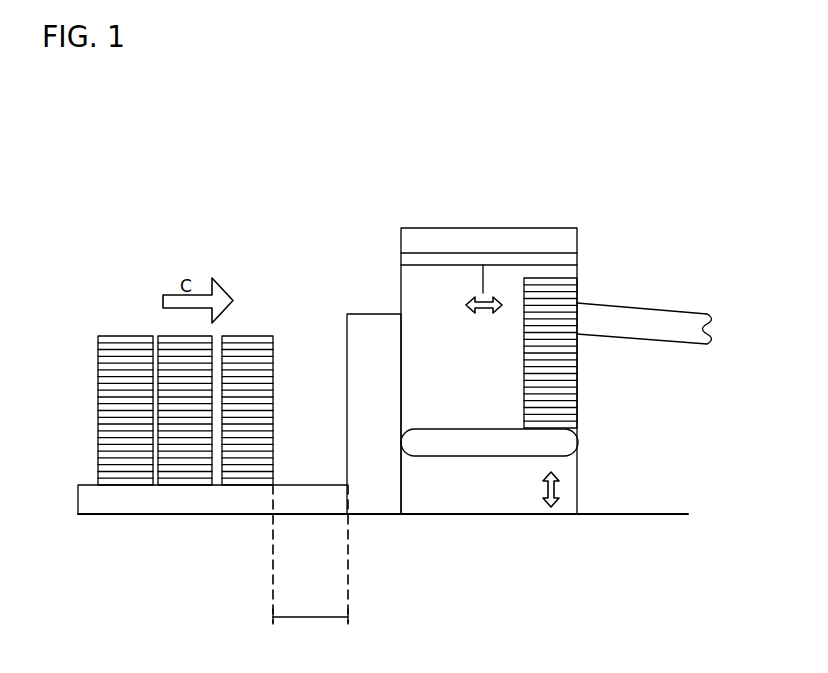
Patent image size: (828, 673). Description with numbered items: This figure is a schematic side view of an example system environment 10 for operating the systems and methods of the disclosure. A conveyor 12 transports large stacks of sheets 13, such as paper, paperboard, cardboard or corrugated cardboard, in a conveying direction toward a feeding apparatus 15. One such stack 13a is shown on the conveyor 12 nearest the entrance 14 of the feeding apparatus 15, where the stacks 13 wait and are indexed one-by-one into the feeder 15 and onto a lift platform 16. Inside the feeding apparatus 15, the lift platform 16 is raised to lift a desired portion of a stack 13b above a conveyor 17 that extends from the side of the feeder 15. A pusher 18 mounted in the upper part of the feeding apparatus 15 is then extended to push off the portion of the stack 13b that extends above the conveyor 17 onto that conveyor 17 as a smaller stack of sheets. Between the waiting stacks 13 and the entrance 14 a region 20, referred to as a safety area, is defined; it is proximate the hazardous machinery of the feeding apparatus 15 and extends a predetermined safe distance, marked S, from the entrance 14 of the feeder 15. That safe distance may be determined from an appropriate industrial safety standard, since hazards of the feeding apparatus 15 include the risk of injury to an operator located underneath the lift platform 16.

The system environment 10 is at (194, 212).
The conveyor 12 is at (163, 502).
The stacks of sheets 13 is at (98, 370).
The stack of sheets 13a is at (246, 336).
The stack 13b is at (577, 385).
The entrance 14 is at (373, 314).
The feeding apparatus 15 is at (579, 257).
The lift platform 16 is at (555, 446).
The conveyor 17 is at (653, 323).
The pusher 18 is at (483, 252).
The safety area 20 is at (327, 422).